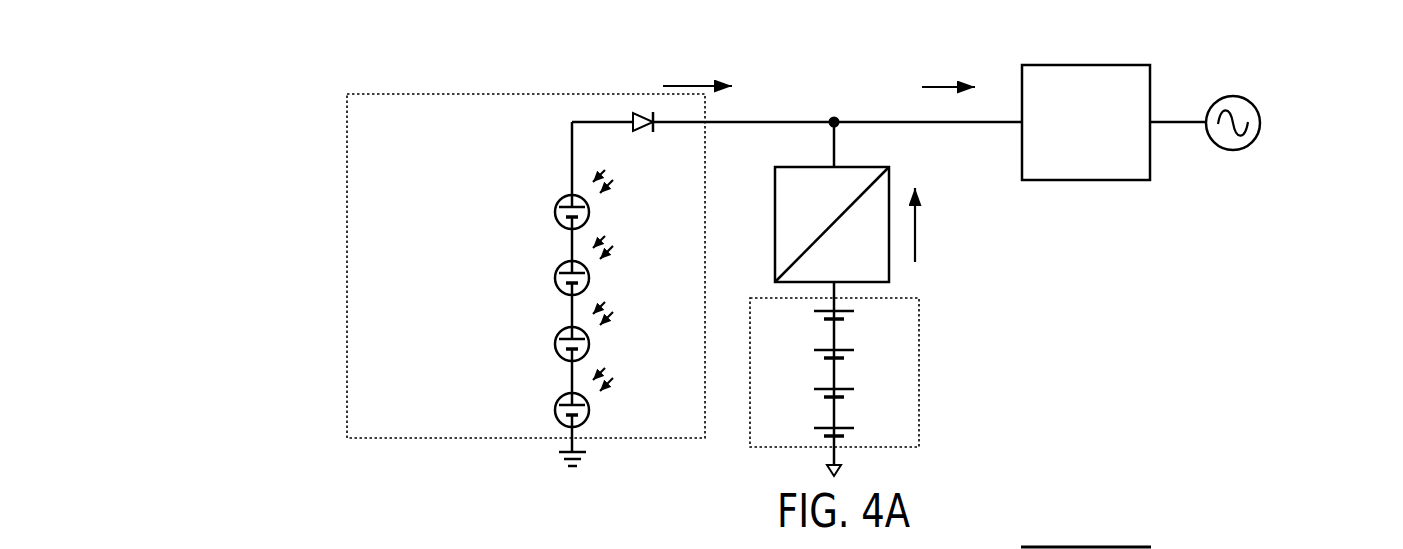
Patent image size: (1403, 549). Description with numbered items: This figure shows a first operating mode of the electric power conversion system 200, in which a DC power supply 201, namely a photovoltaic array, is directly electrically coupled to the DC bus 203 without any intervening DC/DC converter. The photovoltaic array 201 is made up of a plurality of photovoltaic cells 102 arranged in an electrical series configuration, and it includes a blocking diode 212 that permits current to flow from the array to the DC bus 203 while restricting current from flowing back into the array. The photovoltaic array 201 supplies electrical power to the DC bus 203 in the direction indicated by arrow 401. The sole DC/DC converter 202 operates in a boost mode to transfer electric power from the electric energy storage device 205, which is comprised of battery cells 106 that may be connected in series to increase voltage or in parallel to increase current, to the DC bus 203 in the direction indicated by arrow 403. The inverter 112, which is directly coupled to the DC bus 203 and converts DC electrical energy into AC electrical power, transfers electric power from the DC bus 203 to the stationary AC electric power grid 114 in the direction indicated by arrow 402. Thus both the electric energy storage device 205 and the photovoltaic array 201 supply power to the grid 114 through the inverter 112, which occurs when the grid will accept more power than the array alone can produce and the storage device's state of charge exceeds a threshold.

The electric power conversion system 200 is at (198, 92).
The DC power supply 201 is at (332, 113).
The blocking diode 212 is at (637, 132).
The photovoltaic cell 102 is at (590, 212).
The arrow 401 is at (706, 89).
The arrow 402 is at (935, 90).
The arrow 403 is at (916, 208).
The DC bus 203 is at (840, 126).
The sole DC/DC converter 202 is at (891, 272).
The electric energy storage device 205 is at (930, 318).
The battery cell 106 is at (843, 321).
The inverter 112 is at (1090, 180).
The stationary AC electric power grid 114 is at (1232, 150).